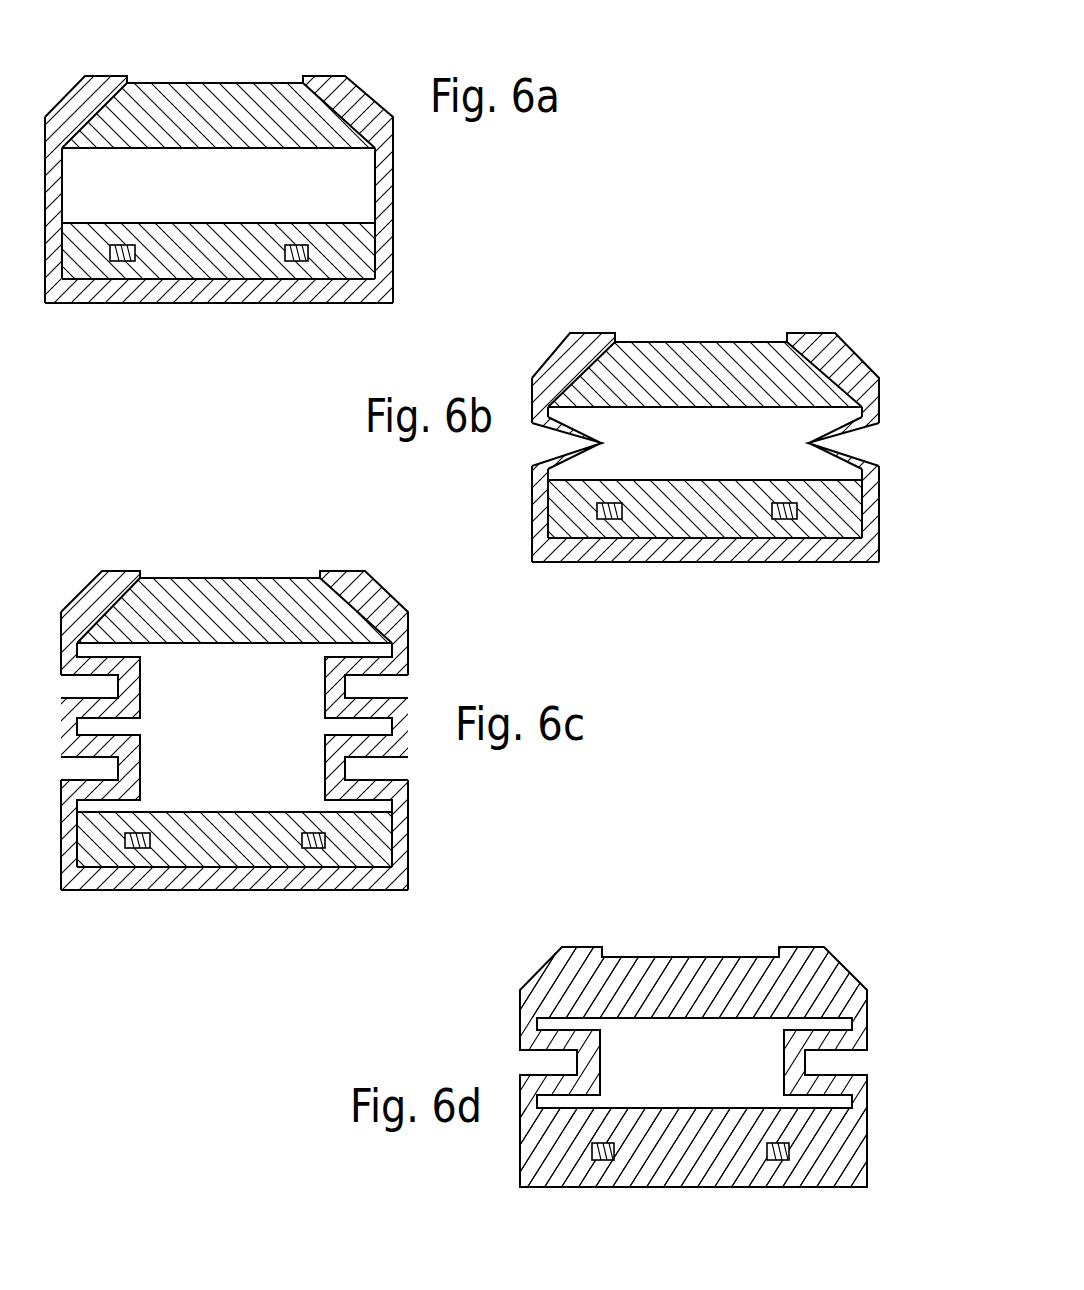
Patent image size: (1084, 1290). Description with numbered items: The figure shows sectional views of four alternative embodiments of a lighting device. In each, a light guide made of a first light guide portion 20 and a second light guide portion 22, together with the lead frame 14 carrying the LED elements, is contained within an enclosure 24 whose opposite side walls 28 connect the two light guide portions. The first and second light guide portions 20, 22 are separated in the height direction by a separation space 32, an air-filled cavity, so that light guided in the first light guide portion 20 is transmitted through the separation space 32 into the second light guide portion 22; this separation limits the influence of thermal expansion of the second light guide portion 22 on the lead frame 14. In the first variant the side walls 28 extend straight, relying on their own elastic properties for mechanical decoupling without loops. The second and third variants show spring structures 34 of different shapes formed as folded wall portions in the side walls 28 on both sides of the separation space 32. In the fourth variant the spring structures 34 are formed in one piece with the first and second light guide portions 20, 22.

In FIG. 6A, the lead frame 14 is at (135, 262).
In FIG. 6B, the lead frame 14 is at (622, 519).
In FIG. 6C, the lead frame 14 is at (150, 849).
In FIG. 6D, the lead frame 14 is at (605, 1161).
In FIG. 6A, the first light guide portion 20 is at (343, 247).
In FIG. 6B, the first light guide portion 20 is at (835, 518).
In FIG. 6C, the first light guide portion 20 is at (367, 855).
In FIG. 6D, the first light guide portion 20 is at (827, 1167).
In FIG. 6A, the second light guide portion 22 is at (276, 90).
In FIG. 6B, the second light guide portion 22 is at (700, 348).
In FIG. 6C, the second light guide portion 22 is at (229, 578).
In FIG. 6D, the second light guide portion 22 is at (727, 967).
In FIG. 6A, the enclosure 24 is at (366, 313).
In FIG. 6A, the side walls 28 is at (384, 184).
In FIG. 6B, the side walls 28 is at (875, 502).
In FIG. 6C, the side walls 28 is at (402, 800).
In FIG. 6A, the separation space 32 is at (243, 195).
In FIG. 6B, the separation space 32 is at (723, 455).
In FIG. 6C, the separation space 32 is at (251, 738).
In FIG. 6D, the separation space 32 is at (720, 1073).
In FIG. 6B, the spring structures 34 is at (872, 444).
In FIG. 6C, the spring structures 34 is at (434, 679).
In FIG. 6D, the spring structures 34 is at (526, 1062).